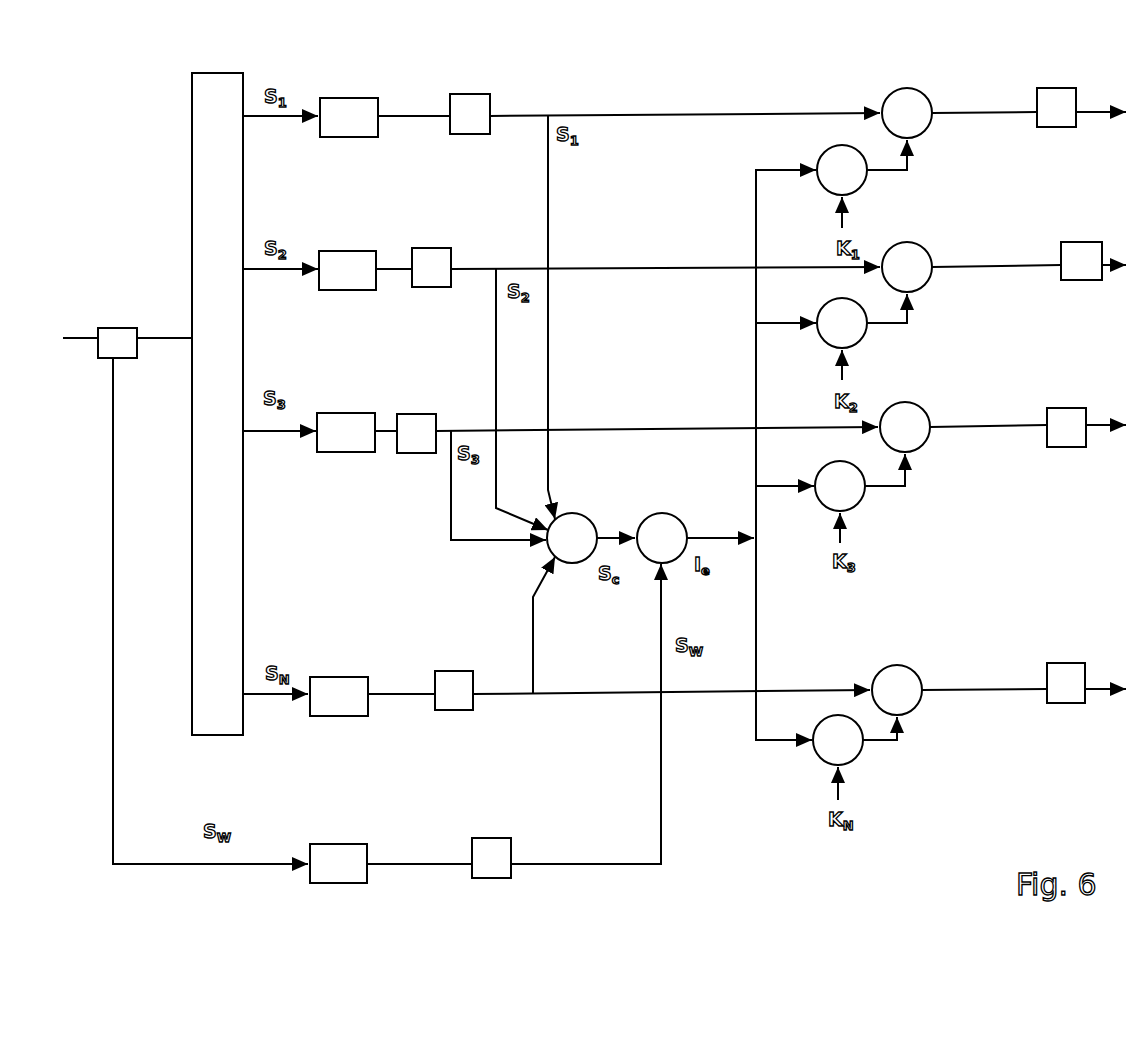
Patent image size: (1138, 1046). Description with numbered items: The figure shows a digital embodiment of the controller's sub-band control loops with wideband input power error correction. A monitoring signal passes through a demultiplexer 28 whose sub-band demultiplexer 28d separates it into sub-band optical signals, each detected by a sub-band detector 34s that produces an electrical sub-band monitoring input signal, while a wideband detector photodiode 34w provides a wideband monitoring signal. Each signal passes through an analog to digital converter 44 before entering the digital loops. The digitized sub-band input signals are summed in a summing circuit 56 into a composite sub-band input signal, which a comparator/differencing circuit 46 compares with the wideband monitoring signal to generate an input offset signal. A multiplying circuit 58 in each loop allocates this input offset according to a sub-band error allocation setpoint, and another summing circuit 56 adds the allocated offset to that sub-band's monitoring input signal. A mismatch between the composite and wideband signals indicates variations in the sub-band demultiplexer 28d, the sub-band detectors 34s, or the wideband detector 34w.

The demultiplexer 28 is at (128, 360).
The sub-band demultiplexer 28d is at (190, 261).
The sub-band detector 34s is at (372, 98).
The wideband detector photodiode 34w is at (368, 844).
The analog to digital converter 44 is at (487, 134).
The comparator/differencing circuit 46 is at (1076, 127).
The summing circuit 56 is at (930, 130).
The multiplying circuit 58 is at (820, 153).